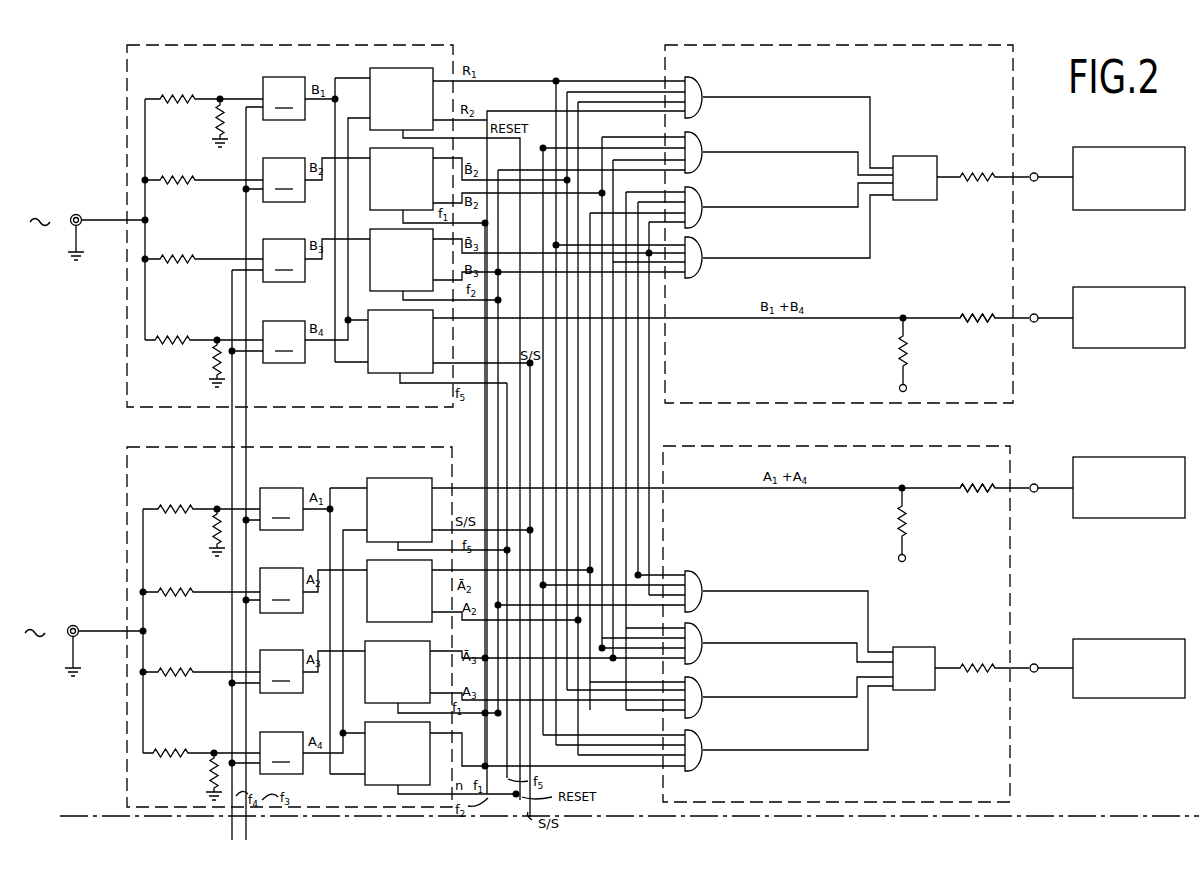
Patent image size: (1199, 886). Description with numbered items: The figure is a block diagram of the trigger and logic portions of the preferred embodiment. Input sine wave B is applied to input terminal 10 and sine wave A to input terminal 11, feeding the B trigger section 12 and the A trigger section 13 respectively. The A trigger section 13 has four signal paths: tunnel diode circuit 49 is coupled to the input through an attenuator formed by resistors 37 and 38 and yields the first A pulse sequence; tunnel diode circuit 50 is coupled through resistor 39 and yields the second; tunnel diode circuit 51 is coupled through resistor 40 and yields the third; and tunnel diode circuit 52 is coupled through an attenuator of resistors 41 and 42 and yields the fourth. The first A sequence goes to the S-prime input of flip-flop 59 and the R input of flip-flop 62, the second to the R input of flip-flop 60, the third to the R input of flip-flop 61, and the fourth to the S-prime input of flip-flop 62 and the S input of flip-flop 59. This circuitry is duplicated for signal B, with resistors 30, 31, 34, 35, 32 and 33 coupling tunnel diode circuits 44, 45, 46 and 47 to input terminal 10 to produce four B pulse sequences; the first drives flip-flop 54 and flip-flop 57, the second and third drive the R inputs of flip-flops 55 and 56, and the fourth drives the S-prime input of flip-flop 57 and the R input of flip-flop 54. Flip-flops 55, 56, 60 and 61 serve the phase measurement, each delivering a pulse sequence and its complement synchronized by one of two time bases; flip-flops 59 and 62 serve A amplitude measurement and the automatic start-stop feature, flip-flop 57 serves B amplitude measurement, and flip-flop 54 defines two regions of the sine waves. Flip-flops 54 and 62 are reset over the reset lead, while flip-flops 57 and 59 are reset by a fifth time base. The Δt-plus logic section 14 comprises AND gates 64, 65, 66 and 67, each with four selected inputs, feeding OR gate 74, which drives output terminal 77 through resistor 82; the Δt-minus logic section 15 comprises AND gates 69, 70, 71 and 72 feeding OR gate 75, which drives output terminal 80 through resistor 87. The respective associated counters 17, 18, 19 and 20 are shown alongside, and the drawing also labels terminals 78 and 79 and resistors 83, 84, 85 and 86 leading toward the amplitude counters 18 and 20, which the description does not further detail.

The input terminal 10 is at (80, 226).
The input terminal 11 is at (77, 637).
The B trigger section 12 is at (453, 33).
The A trigger section 13 is at (450, 426).
The Δt+ logic section 14 is at (978, 44).
The Δt- logic section 15 is at (997, 438).
The delta t plus counter 17 is at (1094, 147).
The B amplitude counter 18 is at (1094, 286).
The delta t minus counter 19 is at (1087, 634).
The A amplitude counter 20 is at (1094, 456).
The resistor 30 is at (178, 95).
The resistor 31 is at (216, 123).
The resistor 32 is at (175, 346).
The resistor 33 is at (212, 363).
The resistor 34 is at (180, 186).
The resistor 35 is at (180, 263).
The resistor 37 is at (200, 490).
The resistor 38 is at (211, 532).
The resistor 39 is at (189, 584).
The resistor 40 is at (187, 664).
The resistor 41 is at (187, 749).
The resistor 42 is at (210, 774).
The tunnel diode circuit 44 is at (284, 98).
The tunnel diode circuit 45 is at (284, 180).
The tunnel diode circuit 46 is at (284, 260).
The tunnel diode circuit 47 is at (284, 342).
The tunnel diode circuit 49 is at (281, 509).
The tunnel diode circuit 50 is at (281, 590).
The tunnel diode circuit 51 is at (281, 671).
The tunnel diode circuit 52 is at (281, 753).
The flip-flop circuit 54 is at (397, 68).
The flip-flop circuit 55 is at (379, 148).
The flip-flop circuit 56 is at (379, 229).
The flip-flop circuit 57 is at (377, 310).
The flip-flop circuit 59 is at (379, 478).
The flip-flop circuit 60 is at (377, 563).
The flip-flop circuit 61 is at (375, 641).
The flip-flop circuit 62 is at (375, 722).
The AND gate 64 is at (712, 78).
The AND gate 65 is at (690, 137).
The AND gate 66 is at (690, 190).
The AND gate 67 is at (690, 245).
The AND gate 69 is at (704, 558).
The AND gate 70 is at (710, 620).
The AND gate 71 is at (710, 675).
The AND gate 72 is at (710, 727).
The OR gate 74 is at (933, 156).
The OR gate 75 is at (945, 646).
The output terminal 77 is at (1031, 172).
The output terminal 78 is at (1048, 302).
The output terminal 79 is at (1046, 476).
The output terminal 80 is at (1044, 652).
The resistor 82 is at (990, 186).
The resistor 83 is at (990, 300).
The resistor 84 is at (906, 348).
The resistor 85 is at (970, 493).
The resistor 86 is at (906, 522).
The resistor 87 is at (987, 676).